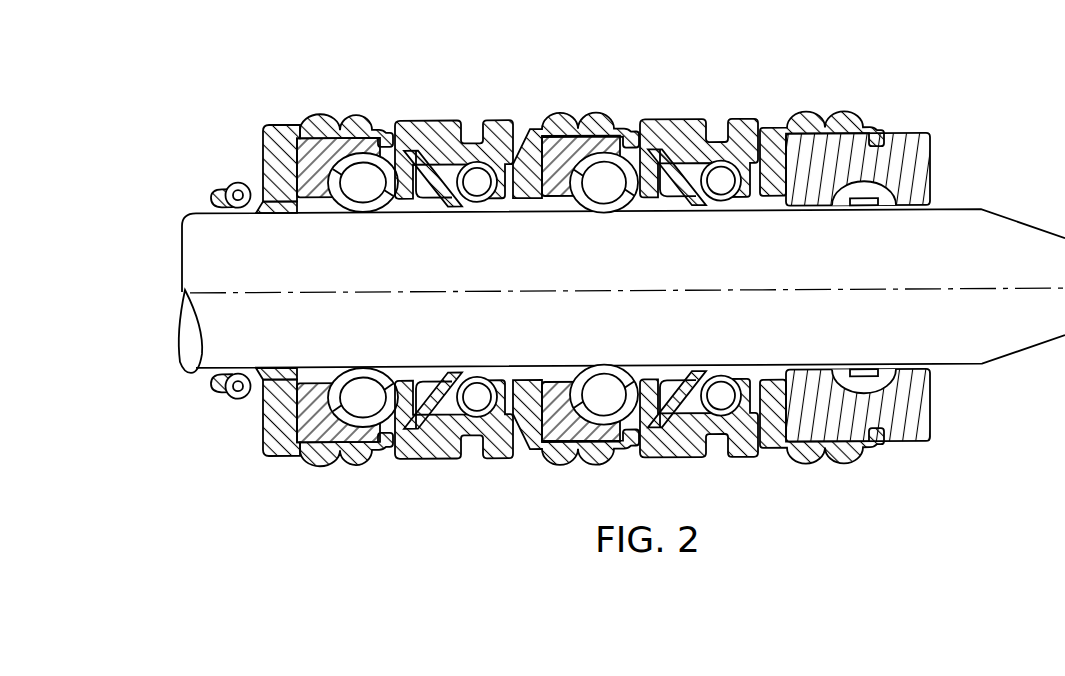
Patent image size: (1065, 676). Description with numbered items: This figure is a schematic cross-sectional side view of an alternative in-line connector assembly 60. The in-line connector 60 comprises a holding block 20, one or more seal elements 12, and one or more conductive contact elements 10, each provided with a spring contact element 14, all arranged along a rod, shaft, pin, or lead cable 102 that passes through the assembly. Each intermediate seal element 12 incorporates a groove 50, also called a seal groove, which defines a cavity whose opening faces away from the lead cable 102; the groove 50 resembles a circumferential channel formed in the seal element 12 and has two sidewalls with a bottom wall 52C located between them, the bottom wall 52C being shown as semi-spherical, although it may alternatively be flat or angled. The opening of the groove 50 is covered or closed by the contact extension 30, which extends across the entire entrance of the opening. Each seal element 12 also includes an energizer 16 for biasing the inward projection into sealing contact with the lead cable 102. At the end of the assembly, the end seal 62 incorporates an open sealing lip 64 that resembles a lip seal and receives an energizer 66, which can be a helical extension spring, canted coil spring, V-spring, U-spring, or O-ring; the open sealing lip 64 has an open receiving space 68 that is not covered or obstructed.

The in-line connector assembly 60 is at (192, 80).
The end seal 62 is at (281, 122).
The open sealing lip 64 is at (263, 212).
The energizer 66 is at (222, 183).
The open receiving space 68 is at (251, 178).
The conductive contact element 10 is at (413, 114).
The contact extension 30 is at (457, 125).
The seal element 12 is at (557, 112).
The spring contact element 14 is at (621, 212).
The energizer 16 is at (479, 212).
The groove 50 is at (742, 212).
The bottom wall 52C is at (483, 376).
The holding block 20 is at (903, 127).
The lead cable 102 is at (966, 229).